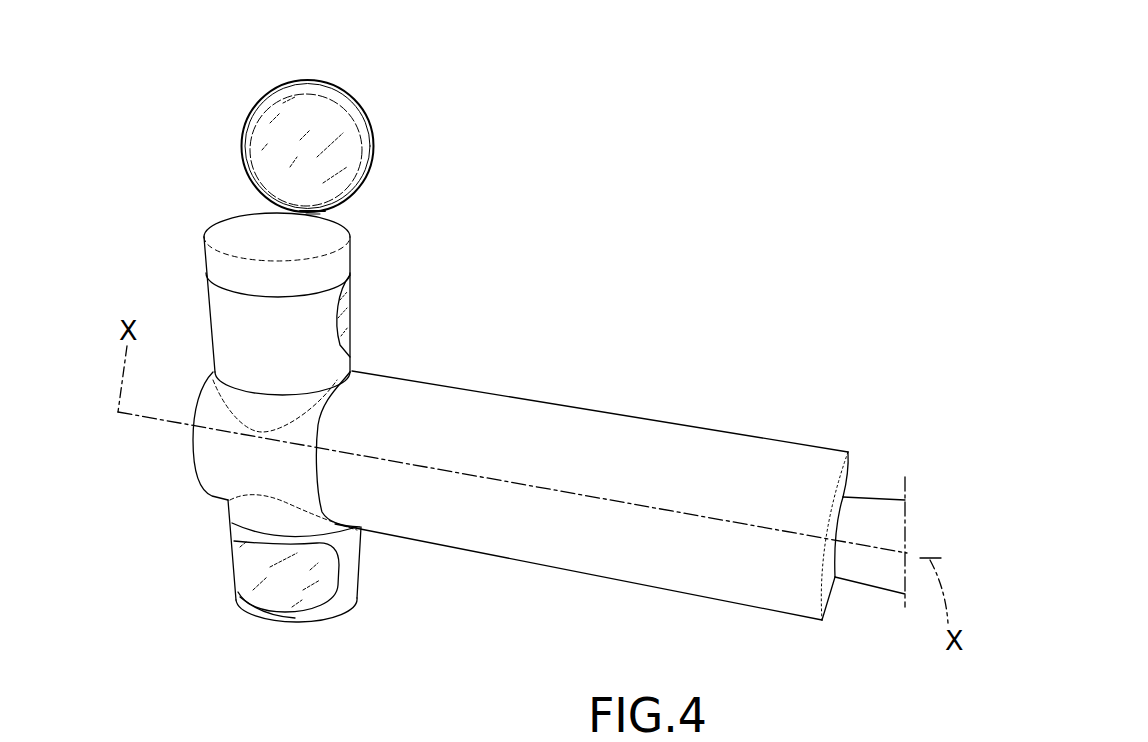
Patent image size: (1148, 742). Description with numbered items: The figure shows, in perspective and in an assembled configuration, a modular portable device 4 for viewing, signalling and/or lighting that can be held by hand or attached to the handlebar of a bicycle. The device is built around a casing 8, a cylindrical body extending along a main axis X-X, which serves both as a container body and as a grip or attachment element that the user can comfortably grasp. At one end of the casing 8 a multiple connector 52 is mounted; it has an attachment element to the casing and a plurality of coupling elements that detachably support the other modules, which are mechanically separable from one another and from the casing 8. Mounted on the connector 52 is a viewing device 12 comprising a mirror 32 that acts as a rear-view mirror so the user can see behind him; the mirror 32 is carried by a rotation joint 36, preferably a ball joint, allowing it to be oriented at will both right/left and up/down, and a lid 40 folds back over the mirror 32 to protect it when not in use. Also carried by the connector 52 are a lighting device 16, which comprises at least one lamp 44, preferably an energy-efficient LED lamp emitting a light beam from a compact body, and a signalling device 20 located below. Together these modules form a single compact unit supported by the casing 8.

The modular portable device 4 is at (777, 150).
The casing 8 is at (683, 447).
The viewing device 12 is at (229, 188).
The lighting device 16 is at (378, 333).
The signalling device 20 is at (353, 600).
The mirror 32 is at (321, 118).
The rotation joint 36 is at (322, 213).
The lid 40 is at (375, 146).
The lamp 44 is at (253, 567).
The multiple connector 52 is at (217, 477).